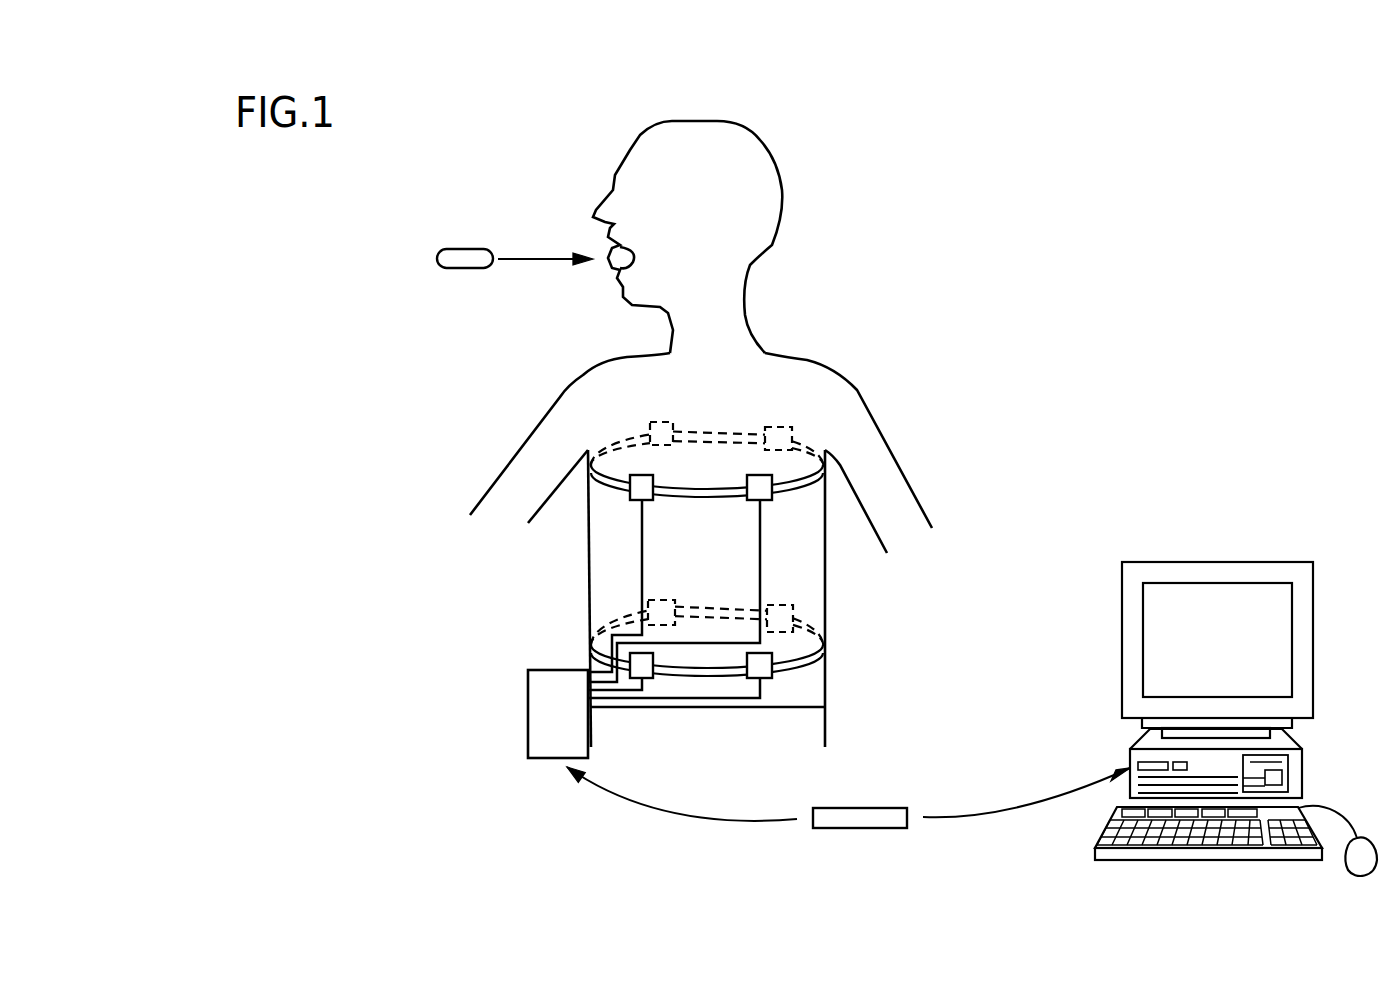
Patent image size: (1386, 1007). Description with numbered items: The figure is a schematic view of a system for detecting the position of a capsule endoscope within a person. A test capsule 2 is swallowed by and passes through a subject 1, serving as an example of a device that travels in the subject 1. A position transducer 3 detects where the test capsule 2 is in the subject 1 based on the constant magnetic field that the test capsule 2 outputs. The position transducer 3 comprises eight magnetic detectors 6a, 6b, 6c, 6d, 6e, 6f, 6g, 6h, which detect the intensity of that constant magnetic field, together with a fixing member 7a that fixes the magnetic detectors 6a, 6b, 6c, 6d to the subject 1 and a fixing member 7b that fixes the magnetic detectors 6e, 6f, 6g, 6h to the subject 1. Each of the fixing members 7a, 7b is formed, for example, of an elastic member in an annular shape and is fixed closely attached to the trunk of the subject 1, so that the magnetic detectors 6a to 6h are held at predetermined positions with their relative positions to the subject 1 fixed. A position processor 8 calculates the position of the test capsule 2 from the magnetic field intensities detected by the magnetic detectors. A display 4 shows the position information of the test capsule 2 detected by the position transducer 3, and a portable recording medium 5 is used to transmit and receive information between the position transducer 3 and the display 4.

The subject 1 is at (770, 105).
The test capsule 2 is at (453, 268).
The position transducer 3 is at (264, 682).
The display 4 is at (1208, 560).
The portable recording medium 5 is at (857, 820).
The magnetic detector 6a is at (633, 490).
The magnetic detector 6b is at (768, 500).
The magnetic detector 6c is at (773, 427).
The magnetic detector 6d is at (661, 422).
The magnetic detector 6e is at (648, 676).
The magnetic detector 6f is at (768, 676).
The magnetic detector 6g is at (775, 605).
The magnetic detector 6h is at (660, 600).
The fixing member 7a is at (597, 472).
The fixing member 7b is at (708, 672).
The position processor 8 is at (528, 685).